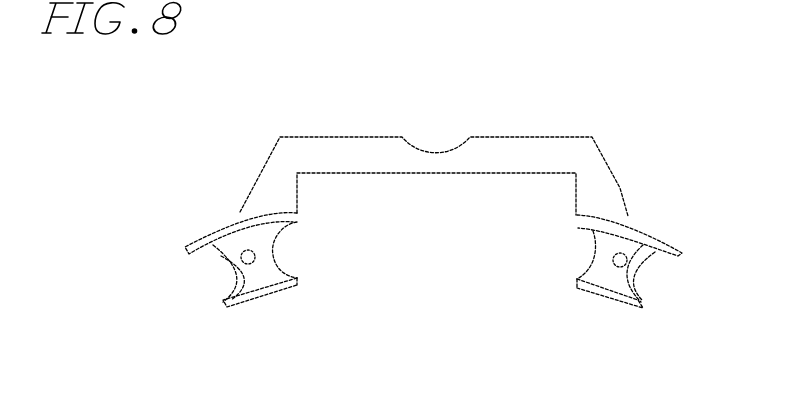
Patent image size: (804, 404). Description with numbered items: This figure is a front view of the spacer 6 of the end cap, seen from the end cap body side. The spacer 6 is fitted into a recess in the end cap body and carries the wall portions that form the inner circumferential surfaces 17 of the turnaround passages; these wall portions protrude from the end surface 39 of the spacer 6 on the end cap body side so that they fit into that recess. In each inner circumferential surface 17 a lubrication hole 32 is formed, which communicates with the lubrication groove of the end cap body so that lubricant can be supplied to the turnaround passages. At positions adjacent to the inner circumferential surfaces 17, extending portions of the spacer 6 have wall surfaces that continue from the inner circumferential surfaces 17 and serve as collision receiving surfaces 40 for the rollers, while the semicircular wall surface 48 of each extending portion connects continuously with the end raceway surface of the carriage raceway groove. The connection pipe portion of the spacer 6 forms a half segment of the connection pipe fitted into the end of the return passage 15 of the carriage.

The spacer 6 is at (512, 135).
The end surface 39 is at (362, 148).
The inner circumferential surface 17 is at (255, 240).
The return passage 15 is at (220, 258).
The lubrication hole 32 is at (250, 265).
The collision receiving surface 40 is at (277, 238).
The semicircular wall surface 48 is at (285, 257).